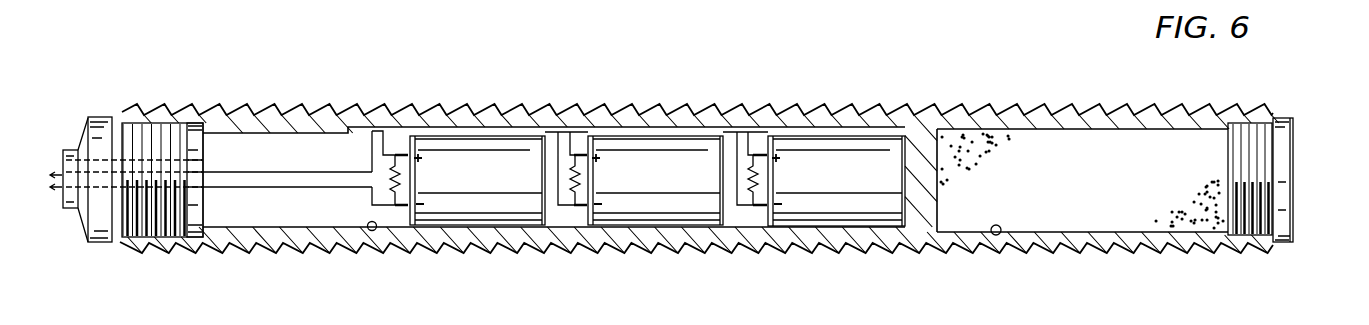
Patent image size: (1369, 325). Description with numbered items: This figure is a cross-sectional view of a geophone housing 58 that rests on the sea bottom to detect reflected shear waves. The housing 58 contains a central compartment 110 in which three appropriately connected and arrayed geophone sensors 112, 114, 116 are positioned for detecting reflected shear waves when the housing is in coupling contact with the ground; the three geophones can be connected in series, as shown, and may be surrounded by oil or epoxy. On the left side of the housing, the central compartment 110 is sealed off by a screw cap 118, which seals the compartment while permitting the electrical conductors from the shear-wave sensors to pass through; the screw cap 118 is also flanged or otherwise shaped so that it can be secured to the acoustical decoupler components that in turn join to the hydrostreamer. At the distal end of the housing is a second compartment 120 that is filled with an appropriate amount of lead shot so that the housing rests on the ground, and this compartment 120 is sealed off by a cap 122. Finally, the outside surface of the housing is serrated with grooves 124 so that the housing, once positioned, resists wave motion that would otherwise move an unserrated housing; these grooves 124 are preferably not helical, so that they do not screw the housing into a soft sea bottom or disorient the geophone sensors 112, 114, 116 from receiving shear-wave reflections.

The housing 58 is at (749, 57).
The central compartment 110 is at (371, 231).
The geophone sensor 112 is at (478, 158).
The geophone sensor 114 is at (660, 157).
The geophone sensor 116 is at (836, 158).
The screw cap 118 is at (100, 124).
The compartment 120 is at (999, 236).
The cap 122 is at (1287, 226).
The grooves 124 is at (302, 255).